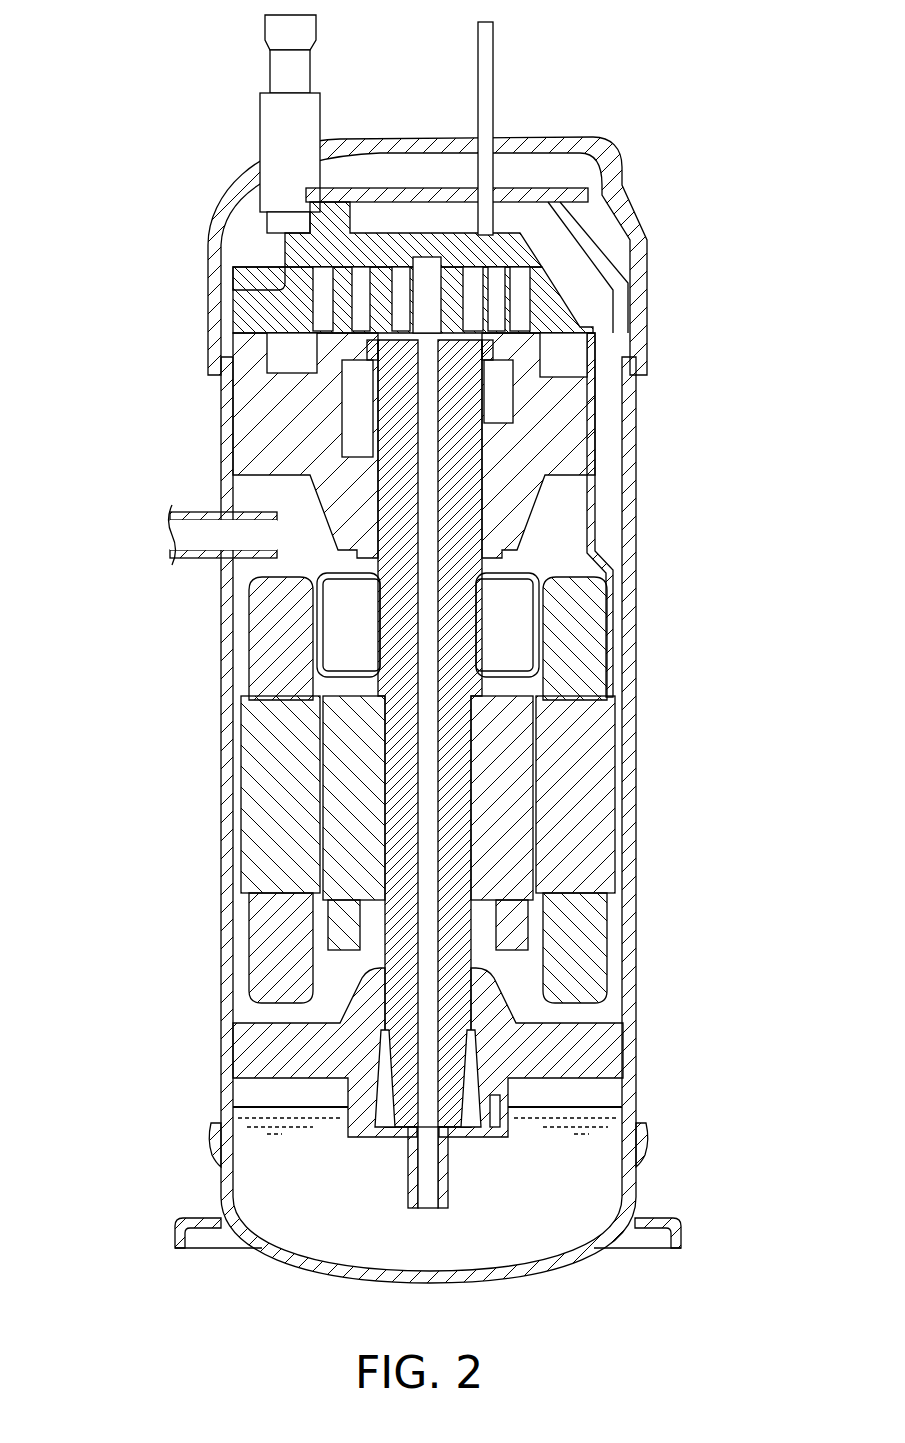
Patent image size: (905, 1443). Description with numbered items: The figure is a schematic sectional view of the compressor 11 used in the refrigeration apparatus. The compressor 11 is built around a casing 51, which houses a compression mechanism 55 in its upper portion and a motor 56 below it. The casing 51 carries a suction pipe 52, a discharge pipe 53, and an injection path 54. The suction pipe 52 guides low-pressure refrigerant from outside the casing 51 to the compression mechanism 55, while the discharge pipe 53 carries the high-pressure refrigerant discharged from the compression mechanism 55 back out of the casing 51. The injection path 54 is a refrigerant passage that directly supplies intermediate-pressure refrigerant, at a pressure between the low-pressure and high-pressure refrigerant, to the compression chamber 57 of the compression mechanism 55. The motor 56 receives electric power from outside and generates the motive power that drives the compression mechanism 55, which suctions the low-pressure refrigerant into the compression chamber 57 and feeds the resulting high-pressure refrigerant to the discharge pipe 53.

The compressor 11 is at (147, 112).
The casing 51 is at (582, 148).
The suction pipe 52 is at (310, 126).
The discharge pipe 53 is at (200, 558).
The injection path 54 is at (487, 95).
The compression mechanism 55 is at (523, 242).
The motor 56 is at (505, 832).
The compression chamber 57 is at (523, 312).